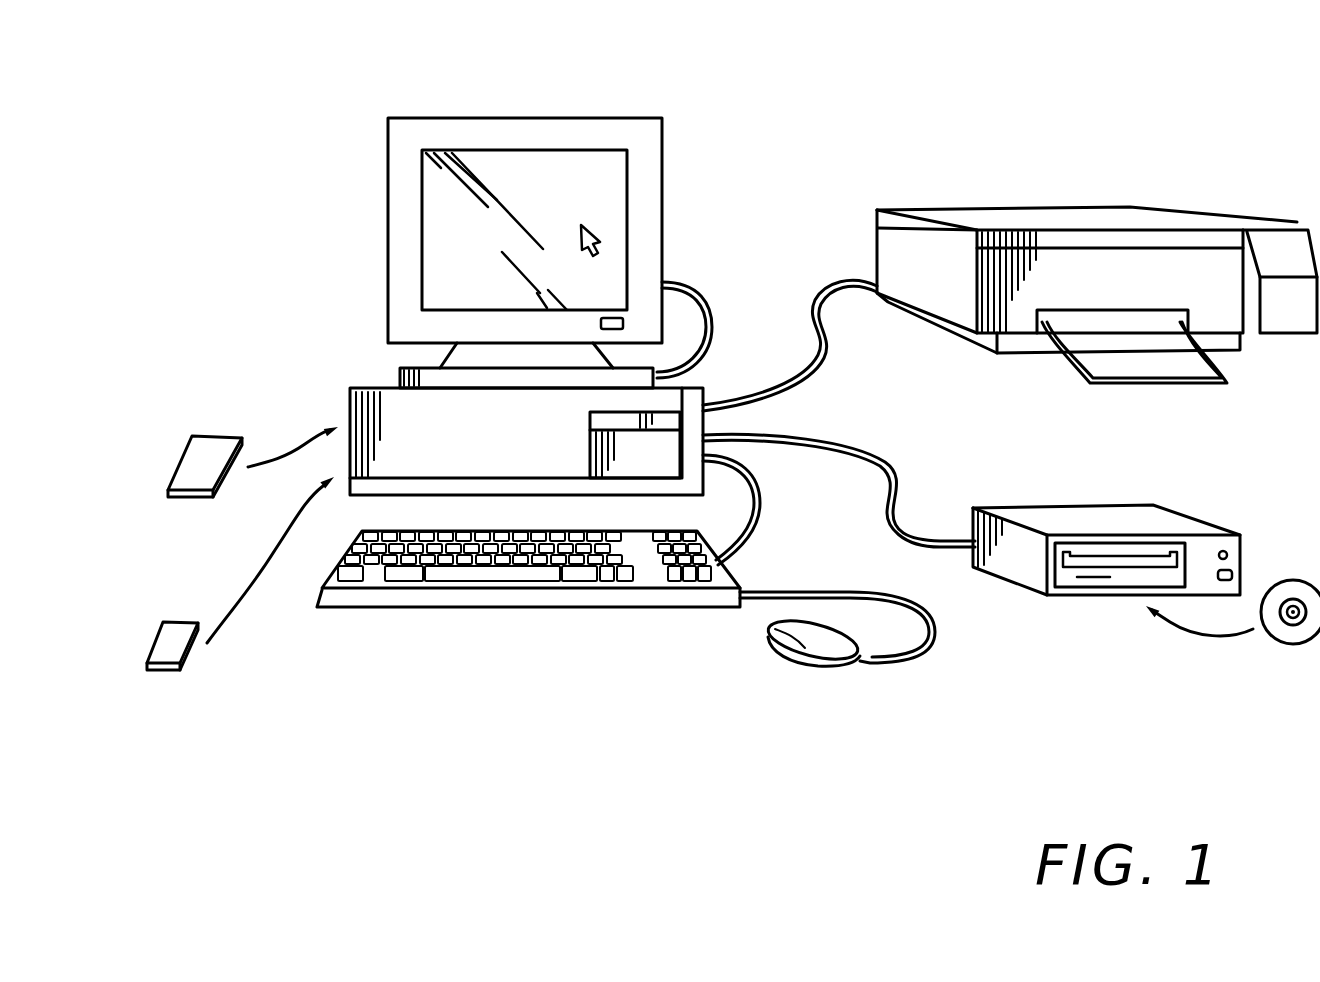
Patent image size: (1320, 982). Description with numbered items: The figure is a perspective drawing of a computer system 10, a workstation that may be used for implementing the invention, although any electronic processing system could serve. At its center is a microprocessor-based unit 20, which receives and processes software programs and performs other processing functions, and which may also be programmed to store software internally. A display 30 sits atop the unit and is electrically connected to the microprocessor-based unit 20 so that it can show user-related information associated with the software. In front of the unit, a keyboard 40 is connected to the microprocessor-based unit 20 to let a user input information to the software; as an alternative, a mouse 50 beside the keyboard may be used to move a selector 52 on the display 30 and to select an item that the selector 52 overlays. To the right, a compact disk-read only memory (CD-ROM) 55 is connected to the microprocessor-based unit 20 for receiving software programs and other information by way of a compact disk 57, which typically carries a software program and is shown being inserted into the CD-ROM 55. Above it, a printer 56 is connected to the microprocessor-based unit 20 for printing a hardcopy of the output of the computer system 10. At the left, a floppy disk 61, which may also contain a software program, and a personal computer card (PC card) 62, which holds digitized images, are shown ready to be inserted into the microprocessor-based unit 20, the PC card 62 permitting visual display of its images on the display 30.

The computer system 10 is at (803, 110).
The microprocessor-based unit 20 is at (368, 387).
The display 30 is at (546, 118).
The keyboard 40 is at (428, 603).
The mouse 50 is at (802, 662).
The selector 52 is at (598, 238).
The compact disk-read only memory (CD-ROM) 55 is at (1007, 508).
The printer 56 is at (957, 210).
The compact disk 57 is at (1282, 632).
The floppy disk 61 is at (180, 497).
The personal computer card (PC card) 62 is at (158, 633).